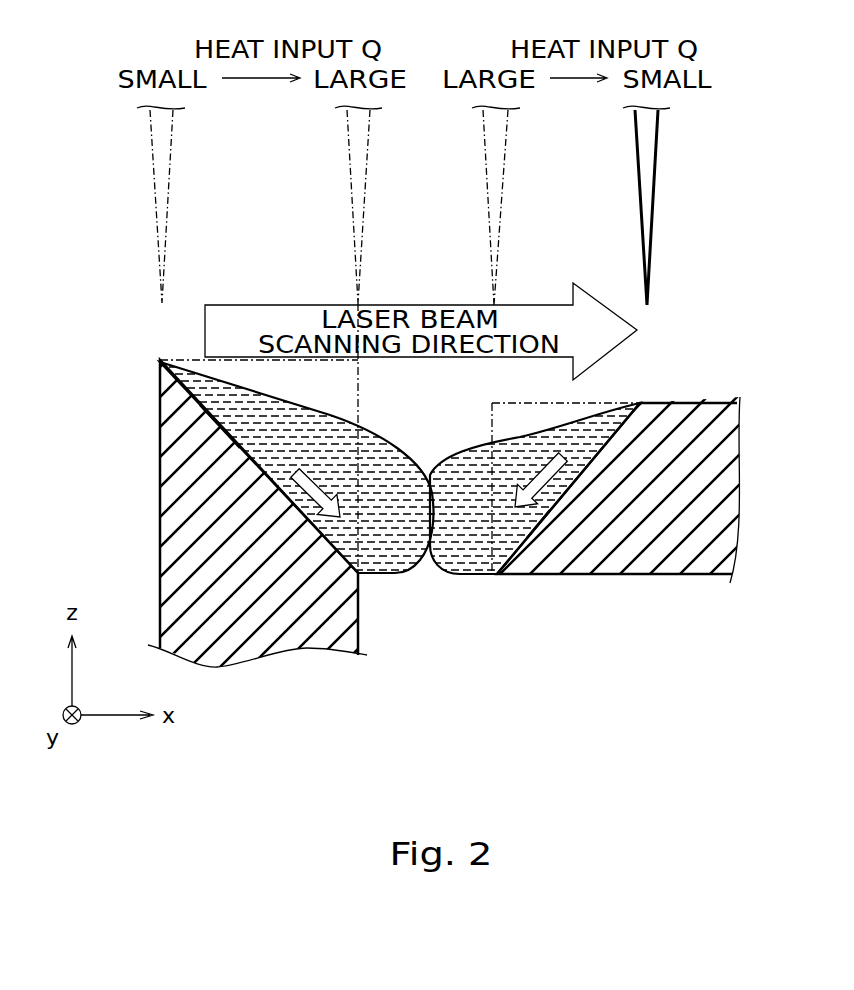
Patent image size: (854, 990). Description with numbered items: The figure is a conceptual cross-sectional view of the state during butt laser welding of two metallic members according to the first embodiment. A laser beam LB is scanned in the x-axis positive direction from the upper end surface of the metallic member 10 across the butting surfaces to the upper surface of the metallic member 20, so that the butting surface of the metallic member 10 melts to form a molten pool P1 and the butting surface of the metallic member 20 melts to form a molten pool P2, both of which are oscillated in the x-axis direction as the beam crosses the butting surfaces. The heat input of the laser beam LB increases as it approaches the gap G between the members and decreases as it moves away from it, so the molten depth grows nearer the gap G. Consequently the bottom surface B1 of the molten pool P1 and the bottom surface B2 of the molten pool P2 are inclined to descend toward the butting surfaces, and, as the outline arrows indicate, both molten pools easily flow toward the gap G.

The metallic member 10 is at (160, 412).
The metallic member 20 is at (690, 403).
The laser beam LB is at (688, 160).
The molten pool P1 is at (380, 445).
The molten pool P2 is at (472, 468).
The bottom surface of the molten pool P1 B1 is at (240, 433).
The bottom surface of the molten pool P2 B2 is at (525, 538).
The gap G is at (362, 625).